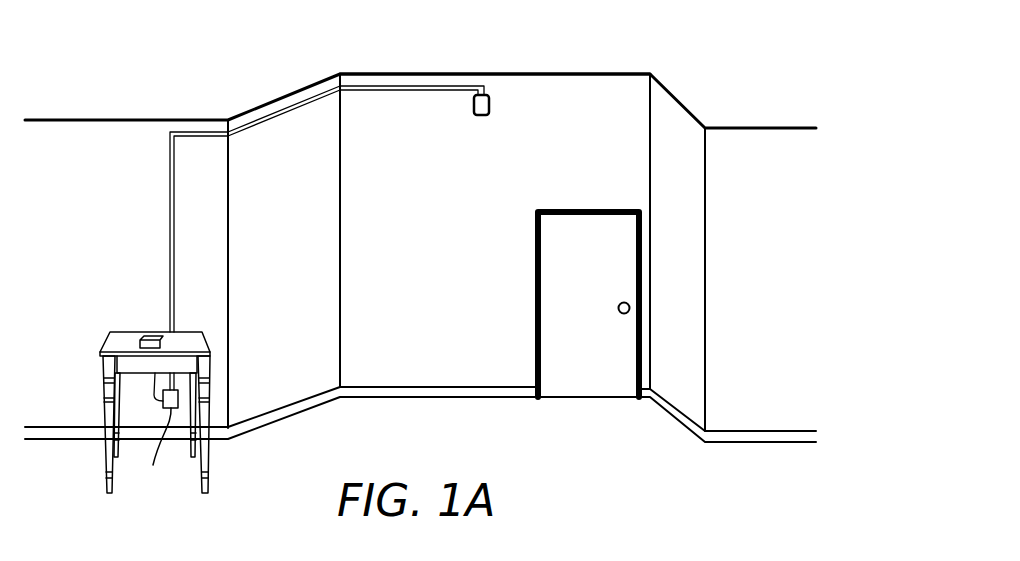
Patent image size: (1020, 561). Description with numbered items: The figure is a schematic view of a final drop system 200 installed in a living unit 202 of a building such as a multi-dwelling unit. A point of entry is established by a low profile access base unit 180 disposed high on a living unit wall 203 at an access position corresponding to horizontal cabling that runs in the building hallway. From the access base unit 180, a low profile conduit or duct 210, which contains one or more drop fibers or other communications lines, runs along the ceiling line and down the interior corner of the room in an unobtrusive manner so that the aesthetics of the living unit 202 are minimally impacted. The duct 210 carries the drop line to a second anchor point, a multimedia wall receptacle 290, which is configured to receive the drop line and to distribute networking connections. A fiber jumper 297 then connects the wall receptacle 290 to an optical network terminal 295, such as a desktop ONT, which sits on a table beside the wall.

The system 200 is at (263, 92).
The living unit 202 is at (581, 100).
The living unit wall 203 is at (438, 150).
The conduit or duct 210 is at (309, 97).
The low profile access base unit 180 is at (492, 102).
The optical network terminal 295 is at (150, 336).
The fiber jumper 297 is at (163, 398).
The wall receptacle 290 is at (160, 451).